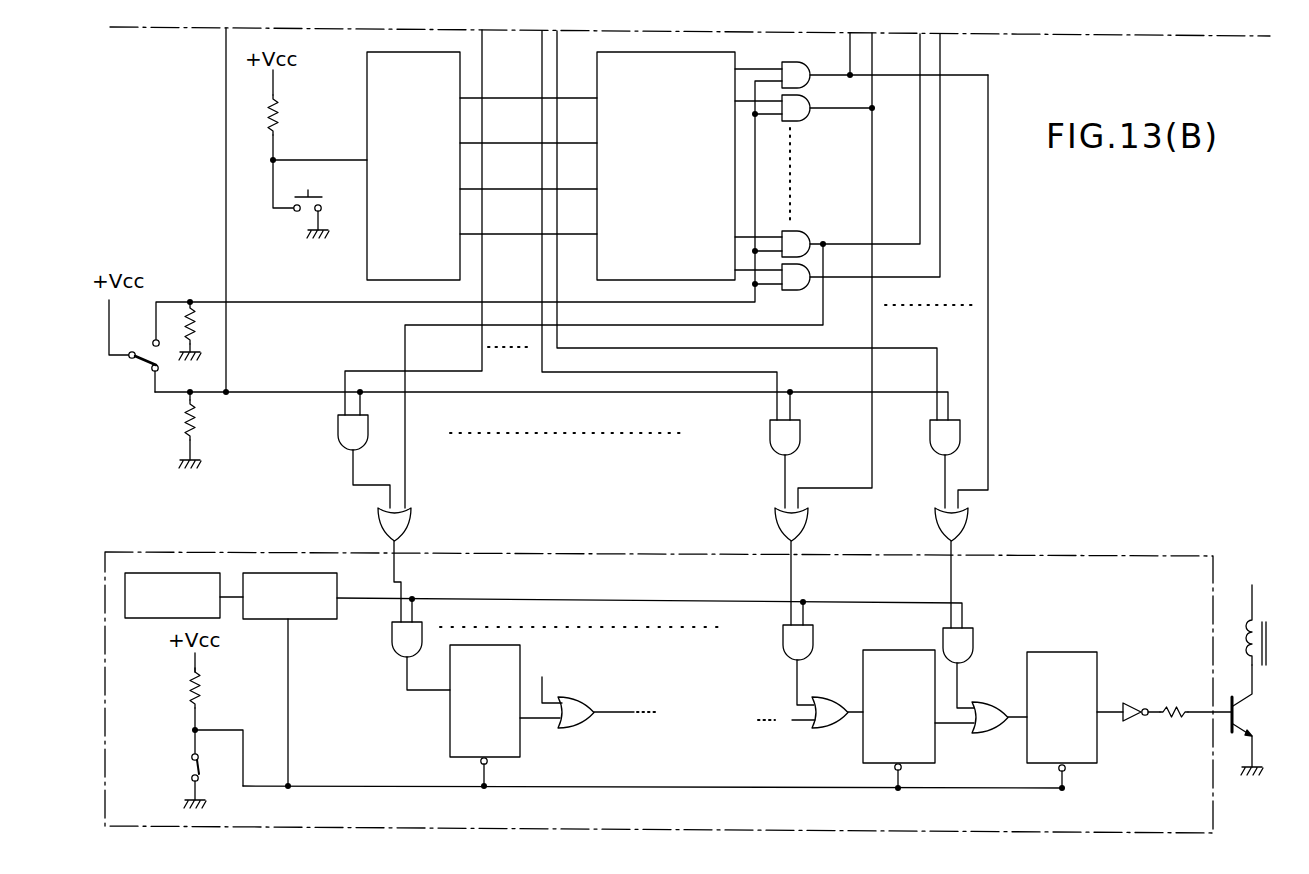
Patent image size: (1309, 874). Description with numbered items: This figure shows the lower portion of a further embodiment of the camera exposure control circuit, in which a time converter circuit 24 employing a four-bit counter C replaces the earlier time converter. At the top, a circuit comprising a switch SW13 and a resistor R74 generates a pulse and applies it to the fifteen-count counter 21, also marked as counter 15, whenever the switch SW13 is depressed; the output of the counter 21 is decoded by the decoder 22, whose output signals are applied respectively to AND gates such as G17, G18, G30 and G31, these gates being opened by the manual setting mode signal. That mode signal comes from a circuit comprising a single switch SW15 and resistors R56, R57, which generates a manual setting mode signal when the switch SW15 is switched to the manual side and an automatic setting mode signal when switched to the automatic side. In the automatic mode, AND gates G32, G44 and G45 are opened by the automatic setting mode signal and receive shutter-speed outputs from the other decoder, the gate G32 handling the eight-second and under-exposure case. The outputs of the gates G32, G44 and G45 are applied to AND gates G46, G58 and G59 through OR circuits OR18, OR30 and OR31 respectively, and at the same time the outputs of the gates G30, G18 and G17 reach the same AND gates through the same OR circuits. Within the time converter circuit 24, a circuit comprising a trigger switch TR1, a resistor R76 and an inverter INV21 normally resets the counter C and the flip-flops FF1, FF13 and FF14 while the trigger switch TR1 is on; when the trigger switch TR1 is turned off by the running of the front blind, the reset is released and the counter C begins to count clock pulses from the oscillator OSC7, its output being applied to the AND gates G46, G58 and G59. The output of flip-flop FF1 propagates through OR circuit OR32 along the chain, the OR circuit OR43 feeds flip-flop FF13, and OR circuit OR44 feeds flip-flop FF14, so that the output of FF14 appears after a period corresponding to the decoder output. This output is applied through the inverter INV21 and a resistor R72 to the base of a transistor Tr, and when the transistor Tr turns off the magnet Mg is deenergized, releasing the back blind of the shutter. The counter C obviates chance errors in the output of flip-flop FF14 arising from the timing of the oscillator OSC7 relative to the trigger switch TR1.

The counter 15 is at (355, 270).
The counter 21 is at (394, 167).
The decoder 22 is at (597, 74).
The time converter circuit 24 is at (1160, 554).
The resistor R74 is at (280, 116).
The switch SW13 is at (300, 215).
The AND gate G17 is at (815, 57).
The AND gate G18 is at (818, 92).
The AND gate G30 is at (810, 233).
The AND gate G31 is at (800, 291).
The switch SW15 is at (150, 362).
The resistor R56 is at (203, 295).
The resistor R57 is at (197, 428).
The AND gate G32 is at (338, 448).
The OR circuit OR18 is at (410, 526).
The AND gate G44 is at (770, 448).
The OR circuit OR30 is at (806, 528).
The AND gate G45 is at (930, 448).
The OR circuit OR31 is at (966, 528).
The oscillator OSC7 is at (172, 595).
The 4-bit counter C is at (316, 620).
The resistor R76 is at (201, 688).
The trigger switch TR1 is at (190, 766).
The AND gate G46 is at (392, 656).
The flip-flop FF1 is at (485, 717).
The OR circuit OR32 is at (580, 727).
The AND gate G58 is at (810, 642).
The OR circuit OR43 is at (831, 728).
The flip-flop FF13 is at (899, 720).
The AND gate G59 is at (970, 644).
The OR circuit OR44 is at (991, 733).
The flip-flop FF14 is at (1062, 721).
The inverter INV21 is at (1132, 722).
The resistor R72 is at (1193, 696).
The transistor Tr is at (1256, 724).
The magnet Mg is at (1247, 648).